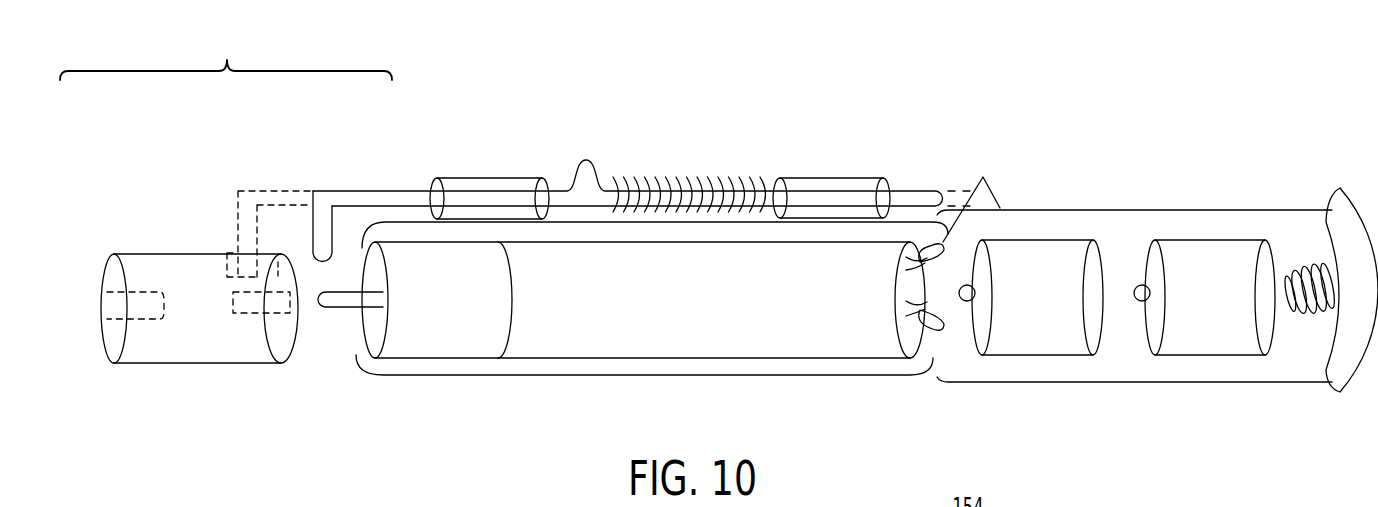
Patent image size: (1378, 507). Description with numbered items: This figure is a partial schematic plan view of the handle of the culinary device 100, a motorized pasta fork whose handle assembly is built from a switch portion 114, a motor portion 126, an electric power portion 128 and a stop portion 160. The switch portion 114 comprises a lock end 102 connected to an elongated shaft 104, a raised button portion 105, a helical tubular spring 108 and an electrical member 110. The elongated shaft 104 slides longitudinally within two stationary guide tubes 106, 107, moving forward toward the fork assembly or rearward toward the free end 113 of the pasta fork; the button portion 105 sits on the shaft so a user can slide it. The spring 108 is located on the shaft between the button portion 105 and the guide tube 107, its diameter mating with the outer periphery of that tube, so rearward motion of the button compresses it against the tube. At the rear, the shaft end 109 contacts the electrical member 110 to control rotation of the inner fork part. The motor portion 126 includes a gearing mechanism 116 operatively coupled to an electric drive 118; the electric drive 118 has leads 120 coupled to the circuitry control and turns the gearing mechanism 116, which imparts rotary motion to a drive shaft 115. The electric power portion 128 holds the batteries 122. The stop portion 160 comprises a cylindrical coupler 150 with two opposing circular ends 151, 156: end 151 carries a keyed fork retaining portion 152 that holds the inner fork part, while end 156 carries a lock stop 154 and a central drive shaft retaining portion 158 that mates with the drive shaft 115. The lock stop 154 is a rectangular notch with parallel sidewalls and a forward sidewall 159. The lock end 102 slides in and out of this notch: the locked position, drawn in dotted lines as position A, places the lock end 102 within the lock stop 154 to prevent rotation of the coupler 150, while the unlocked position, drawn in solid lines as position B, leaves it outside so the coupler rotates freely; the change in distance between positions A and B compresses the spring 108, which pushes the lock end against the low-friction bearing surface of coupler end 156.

The injection device 100 is at (898, 92).
The lock end 102 is at (313, 238).
The elongated shaft 104 is at (616, 178).
The raised button portion 105 is at (587, 158).
The guide tube 106 is at (507, 177).
The guide tube 107 is at (845, 177).
The helical tubular spring 108 is at (722, 177).
The shaft end 109 is at (921, 190).
The electrical member 110 is at (990, 183).
The free end 113 is at (1341, 187).
The switch portion 114 is at (604, 188).
The drive shaft 115 is at (335, 310).
The gearing mechanism 116 is at (455, 358).
The electric drive 118 is at (643, 300).
The leads 120 is at (945, 244).
The batteries 122 is at (1031, 355).
The motor portion 126 is at (690, 376).
The electric power portion 128 is at (1117, 209).
The coupler 150 is at (184, 306).
The coupler end 151 is at (110, 353).
The fork retaining portion 152 is at (103, 298).
The lock stop 154 is at (263, 291).
The coupler end 156 is at (282, 353).
The drive shaft retaining portion 158 is at (285, 303).
The forward sidewall 159 is at (227, 253).
The stop portion 160 is at (226, 50).
The position A is at (250, 190).
The position B is at (328, 188).